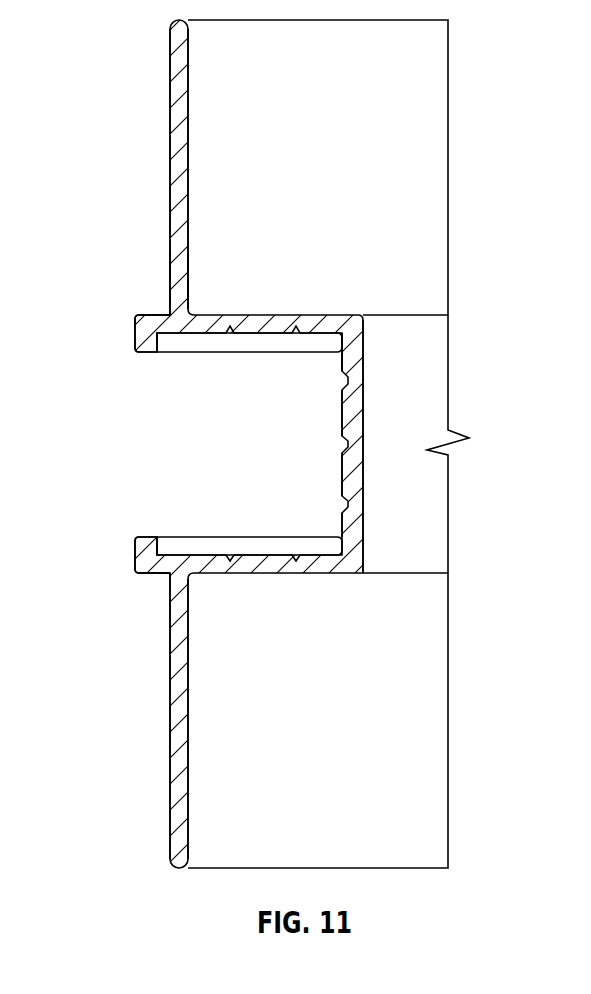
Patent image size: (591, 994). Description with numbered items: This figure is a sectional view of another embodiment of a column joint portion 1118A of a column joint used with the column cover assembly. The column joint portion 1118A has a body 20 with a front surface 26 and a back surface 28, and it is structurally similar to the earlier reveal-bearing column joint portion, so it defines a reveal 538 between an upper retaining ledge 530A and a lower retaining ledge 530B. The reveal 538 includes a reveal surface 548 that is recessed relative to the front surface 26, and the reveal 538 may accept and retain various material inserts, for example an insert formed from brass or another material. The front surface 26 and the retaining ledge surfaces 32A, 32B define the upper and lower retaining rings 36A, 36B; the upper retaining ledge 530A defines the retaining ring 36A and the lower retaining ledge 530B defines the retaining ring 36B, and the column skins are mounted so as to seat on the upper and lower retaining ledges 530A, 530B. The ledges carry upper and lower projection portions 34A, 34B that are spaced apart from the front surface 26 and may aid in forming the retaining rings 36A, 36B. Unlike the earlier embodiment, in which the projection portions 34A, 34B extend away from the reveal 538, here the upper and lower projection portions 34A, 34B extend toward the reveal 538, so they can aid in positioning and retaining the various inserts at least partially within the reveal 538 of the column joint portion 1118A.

The column joint portion 1118A is at (472, 53).
The body 20 is at (440, 108).
The back surface 28 is at (330, 731).
The front surface 26 is at (168, 125).
The upper retaining ring 36A is at (163, 266).
The lower retaining ring 36B is at (162, 618).
The upper retaining ledge surface 32A is at (145, 310).
The lower retaining ledge surface 32B is at (142, 580).
The upper retaining ledge 530A is at (140, 315).
The lower retaining ledge 530B is at (137, 574).
The upper projection portion 34A is at (136, 352).
The lower projection portion 34B is at (137, 537).
The reveal surface 548 is at (338, 435).
The reveal 538 is at (174, 445).